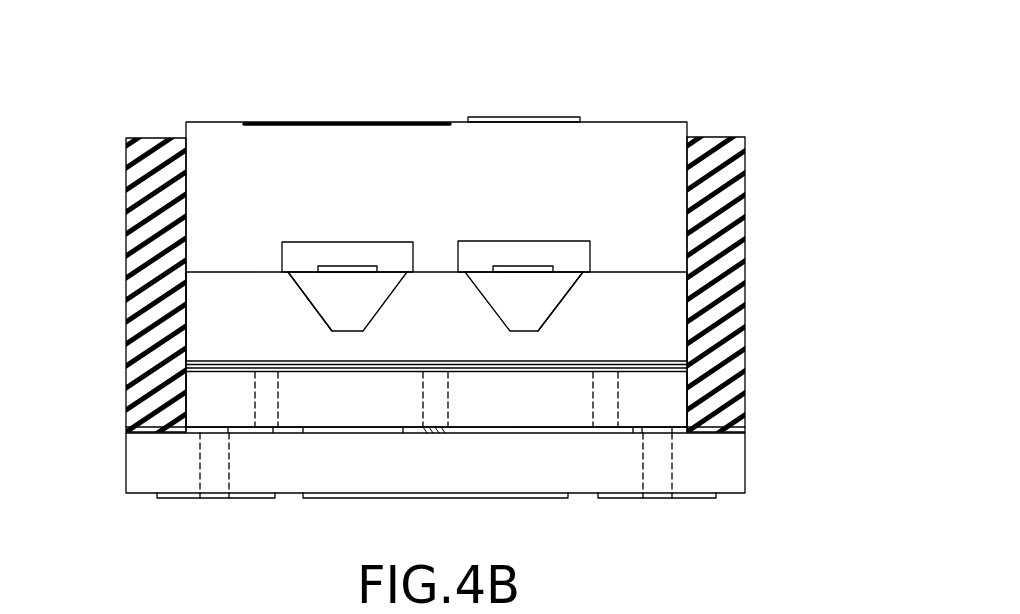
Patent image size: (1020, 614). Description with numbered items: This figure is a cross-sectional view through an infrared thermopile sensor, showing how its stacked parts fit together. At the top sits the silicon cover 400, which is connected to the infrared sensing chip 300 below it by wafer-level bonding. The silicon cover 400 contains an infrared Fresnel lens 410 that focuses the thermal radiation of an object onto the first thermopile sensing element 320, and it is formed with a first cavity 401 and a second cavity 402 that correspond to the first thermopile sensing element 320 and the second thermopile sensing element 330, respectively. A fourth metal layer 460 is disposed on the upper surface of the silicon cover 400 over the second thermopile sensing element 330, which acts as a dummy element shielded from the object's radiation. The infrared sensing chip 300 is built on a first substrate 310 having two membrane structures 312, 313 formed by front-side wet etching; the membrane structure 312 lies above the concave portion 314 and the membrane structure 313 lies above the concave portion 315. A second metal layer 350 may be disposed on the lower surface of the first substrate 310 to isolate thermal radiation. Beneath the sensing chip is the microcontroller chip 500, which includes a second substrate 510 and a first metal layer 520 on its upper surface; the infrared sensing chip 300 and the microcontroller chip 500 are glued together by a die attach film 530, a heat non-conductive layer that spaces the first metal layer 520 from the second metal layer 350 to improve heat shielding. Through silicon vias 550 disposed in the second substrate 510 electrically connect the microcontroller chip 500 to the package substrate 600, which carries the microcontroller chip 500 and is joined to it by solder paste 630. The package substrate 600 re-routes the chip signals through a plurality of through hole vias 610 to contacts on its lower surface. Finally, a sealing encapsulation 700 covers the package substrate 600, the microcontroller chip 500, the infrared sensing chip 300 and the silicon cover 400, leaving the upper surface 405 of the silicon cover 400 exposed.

The infrared sensing chip 300 is at (700, 295).
The first substrate 310 is at (210, 298).
The membrane structure 312 is at (304, 272).
The membrane structure 313 is at (570, 271).
The concave portion 314 is at (316, 297).
The concave portion 315 is at (555, 296).
The first thermopile sensing element 320 is at (372, 248).
The second thermopile sensing element 330 is at (527, 268).
The second metal layer 350 is at (665, 361).
The silicon cover 400 is at (700, 172).
The first cavity 401 is at (347, 267).
The second cavity 402 is at (498, 250).
The upper surface 405 is at (658, 122).
The infrared Fresnel lens 410 is at (321, 124).
The fourth metal layer 460 is at (518, 117).
The microcontroller chip 500 is at (698, 404).
The second substrate 510 is at (207, 399).
The first metal layer 520 is at (690, 388).
The die attach film 530 is at (665, 369).
The through silicon vias 550 is at (263, 405).
The package substrate 600 is at (755, 467).
The through hole vias 610 is at (207, 463).
The solder paste 630 is at (285, 431).
The sealing encapsulation 700 is at (150, 138).